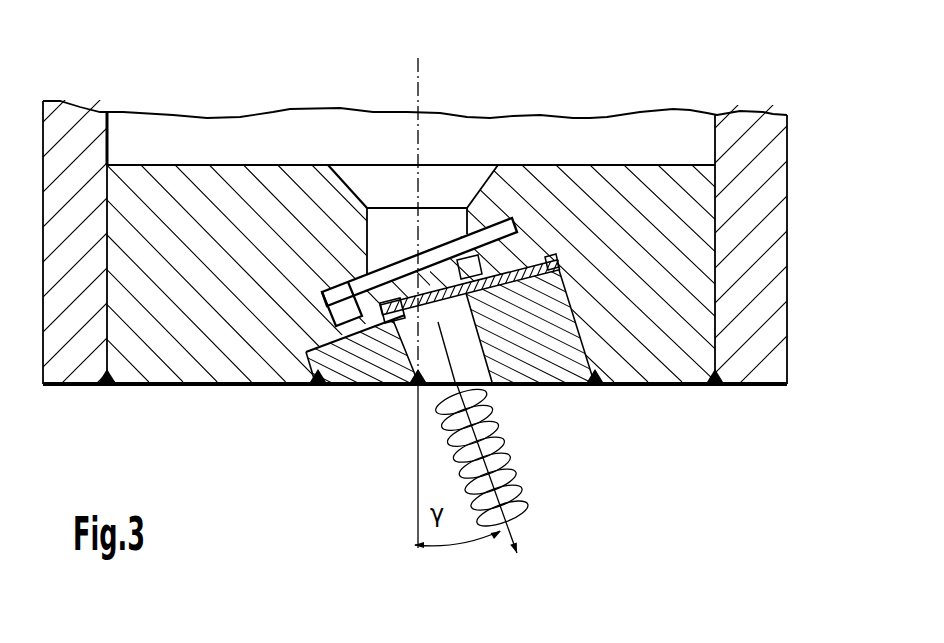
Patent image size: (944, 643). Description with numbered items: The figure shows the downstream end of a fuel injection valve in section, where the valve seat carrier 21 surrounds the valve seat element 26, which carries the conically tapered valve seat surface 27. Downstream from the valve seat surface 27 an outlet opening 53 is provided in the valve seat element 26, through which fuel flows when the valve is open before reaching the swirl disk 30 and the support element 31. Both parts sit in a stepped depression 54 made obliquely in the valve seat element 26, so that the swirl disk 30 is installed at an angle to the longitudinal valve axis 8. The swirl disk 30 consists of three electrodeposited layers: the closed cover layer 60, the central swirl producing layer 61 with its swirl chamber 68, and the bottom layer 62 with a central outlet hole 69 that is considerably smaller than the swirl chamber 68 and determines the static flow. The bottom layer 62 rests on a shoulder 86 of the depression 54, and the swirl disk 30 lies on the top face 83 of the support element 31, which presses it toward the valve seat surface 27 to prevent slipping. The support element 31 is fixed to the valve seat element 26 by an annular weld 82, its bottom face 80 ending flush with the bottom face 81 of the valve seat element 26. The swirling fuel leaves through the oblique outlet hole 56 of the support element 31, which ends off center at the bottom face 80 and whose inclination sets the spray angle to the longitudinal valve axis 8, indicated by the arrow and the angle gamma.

The valve seat carrier 21 is at (763, 143).
The valve seat element 26 is at (697, 208).
The valve seat surface 27 is at (352, 184).
The outlet opening 53 is at (389, 233).
The longitudinal valve axis 8 is at (418, 72).
The swirl disk 30 is at (510, 220).
The cover layer 60 is at (323, 290).
The swirl chamber 68 is at (433, 285).
The top face 83 is at (540, 260).
The shoulder 86 is at (560, 255).
The depression 54 is at (327, 387).
The swirl producing layer 61 is at (355, 385).
The bottom layer 62 is at (300, 387).
The outlet hole 69 is at (412, 397).
The support element 31 is at (577, 380).
The outlet hole 56 is at (495, 375).
The annular weld 82 is at (603, 382).
The bottom face 81 is at (165, 387).
The bottom face 80 is at (559, 388).